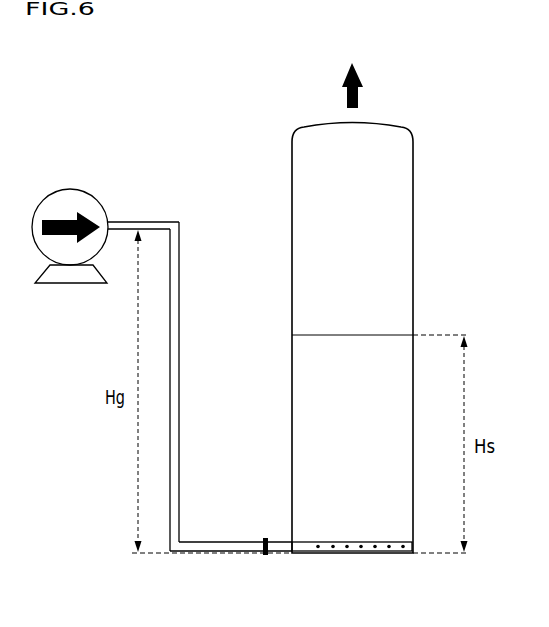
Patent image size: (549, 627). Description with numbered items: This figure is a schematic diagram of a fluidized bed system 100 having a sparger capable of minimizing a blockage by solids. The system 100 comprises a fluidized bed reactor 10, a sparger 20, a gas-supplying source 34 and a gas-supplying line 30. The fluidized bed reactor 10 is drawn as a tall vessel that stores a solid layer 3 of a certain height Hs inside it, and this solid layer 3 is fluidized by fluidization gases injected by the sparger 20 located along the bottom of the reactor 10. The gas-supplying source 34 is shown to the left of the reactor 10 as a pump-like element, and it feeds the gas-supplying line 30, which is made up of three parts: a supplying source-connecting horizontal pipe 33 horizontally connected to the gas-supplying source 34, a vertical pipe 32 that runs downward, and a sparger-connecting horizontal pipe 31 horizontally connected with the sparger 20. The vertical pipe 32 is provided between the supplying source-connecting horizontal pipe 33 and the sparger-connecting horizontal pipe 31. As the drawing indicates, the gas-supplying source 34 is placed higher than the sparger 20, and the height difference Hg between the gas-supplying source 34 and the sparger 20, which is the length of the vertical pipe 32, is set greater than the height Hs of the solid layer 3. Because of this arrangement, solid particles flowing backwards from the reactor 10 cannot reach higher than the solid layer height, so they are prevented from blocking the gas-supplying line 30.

The fluidized bed system 100 is at (465, 78).
The fluidized bed reactor 10 is at (414, 239).
The solid layer 3 is at (376, 437).
The sparger 20 is at (373, 553).
The gas-supplying line 30 is at (161, 366).
The sparger-connecting horizontal pipe 31 is at (228, 552).
The vertical pipe 32 is at (177, 416).
The supplying source-connecting horizontal pipe 33 is at (149, 221).
The gas-supplying source 34 is at (70, 188).